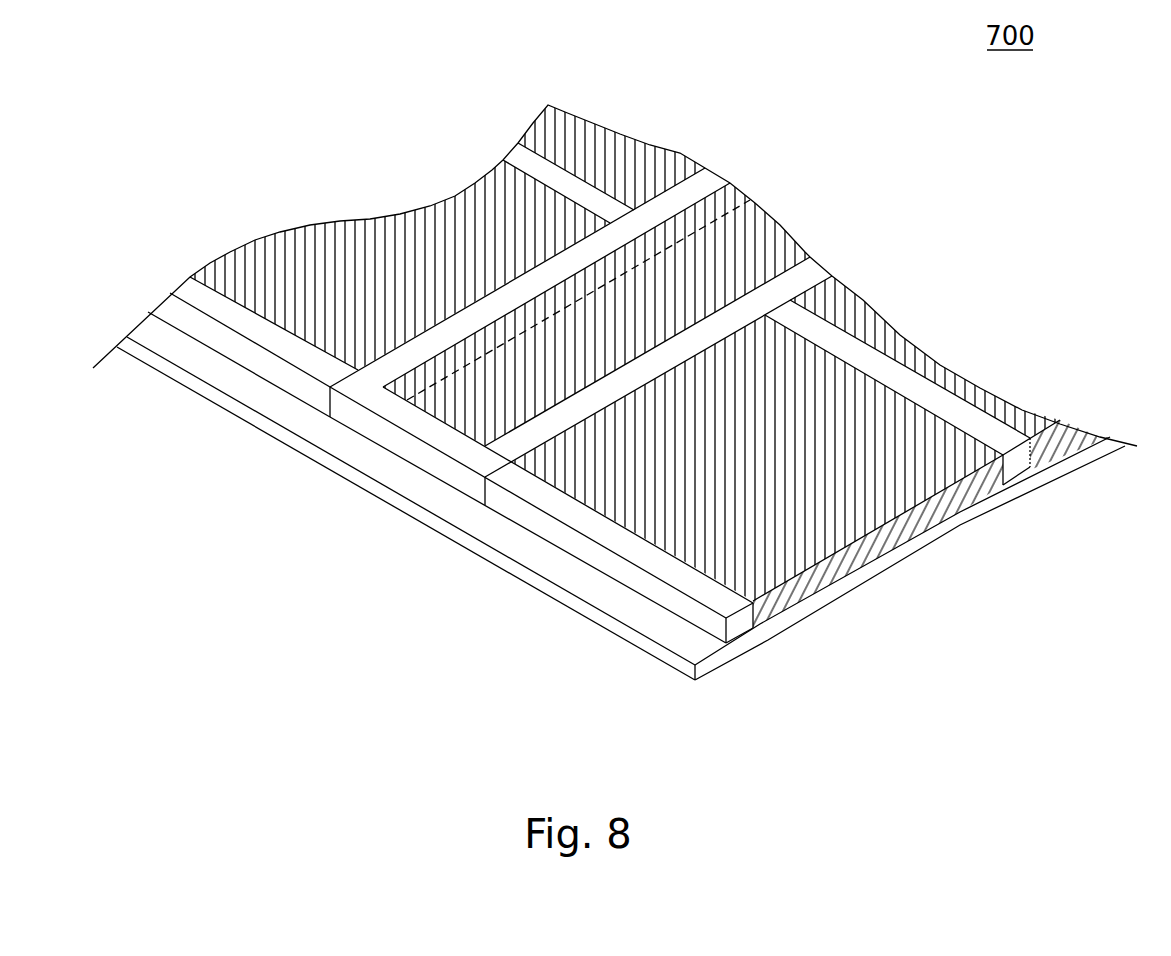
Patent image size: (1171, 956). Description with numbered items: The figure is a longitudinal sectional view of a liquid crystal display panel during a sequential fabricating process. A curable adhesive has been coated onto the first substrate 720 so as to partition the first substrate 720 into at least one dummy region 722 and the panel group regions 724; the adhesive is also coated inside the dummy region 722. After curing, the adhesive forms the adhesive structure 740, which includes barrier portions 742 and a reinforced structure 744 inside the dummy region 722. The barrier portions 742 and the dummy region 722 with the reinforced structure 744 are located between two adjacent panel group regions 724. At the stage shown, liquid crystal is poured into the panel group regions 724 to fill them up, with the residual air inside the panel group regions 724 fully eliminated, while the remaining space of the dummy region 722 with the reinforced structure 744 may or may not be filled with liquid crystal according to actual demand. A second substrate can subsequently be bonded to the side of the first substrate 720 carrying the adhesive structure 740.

The first substrate 720 is at (618, 605).
The dummy region 722 is at (755, 245).
The panel group regions 724 is at (340, 237).
The adhesive structure 740 is at (188, 282).
The barrier portions 742 is at (665, 205).
The reinforced structure 744 is at (478, 424).